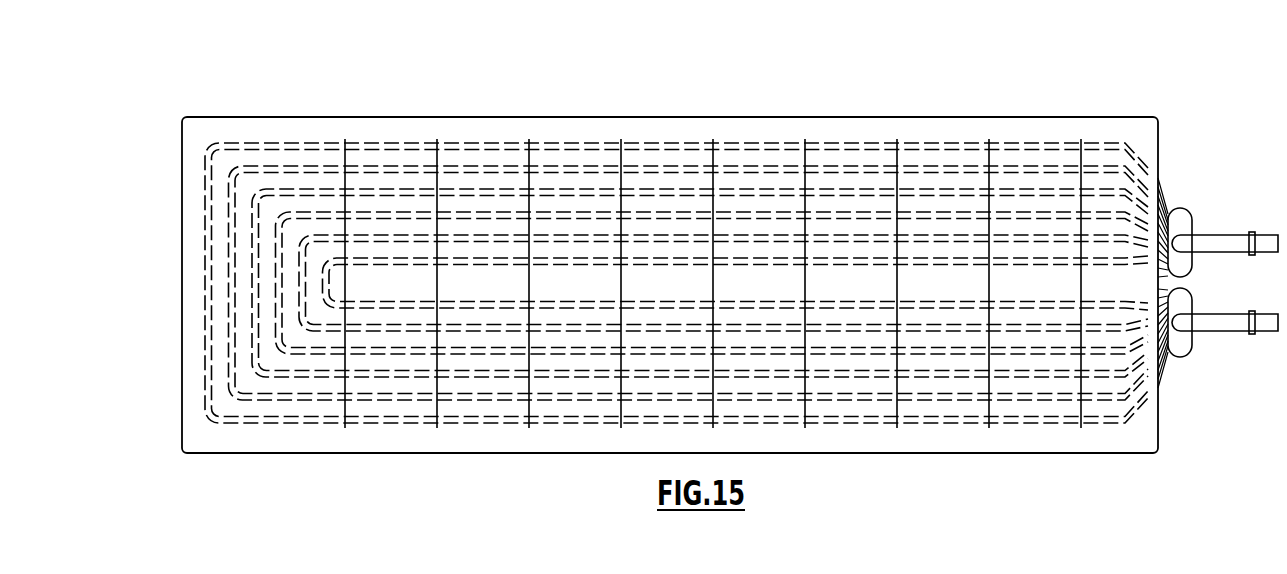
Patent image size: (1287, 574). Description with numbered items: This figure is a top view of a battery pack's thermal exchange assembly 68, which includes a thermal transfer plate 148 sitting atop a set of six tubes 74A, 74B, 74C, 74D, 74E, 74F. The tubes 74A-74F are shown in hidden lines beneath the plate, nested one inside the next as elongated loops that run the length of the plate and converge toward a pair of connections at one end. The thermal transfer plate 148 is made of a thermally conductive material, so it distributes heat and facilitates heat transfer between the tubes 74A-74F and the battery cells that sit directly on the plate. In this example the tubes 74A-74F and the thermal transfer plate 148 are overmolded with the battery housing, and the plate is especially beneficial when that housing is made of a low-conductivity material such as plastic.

The thermal exchange assembly 68 is at (1142, 101).
The thermal transfer plate 148 is at (292, 133).
The tube 74A is at (768, 142).
The tube 74B is at (700, 167).
The tube 74C is at (652, 188).
The tube 74D is at (587, 212).
The tube 74E is at (560, 235).
The tube 74F is at (490, 257).